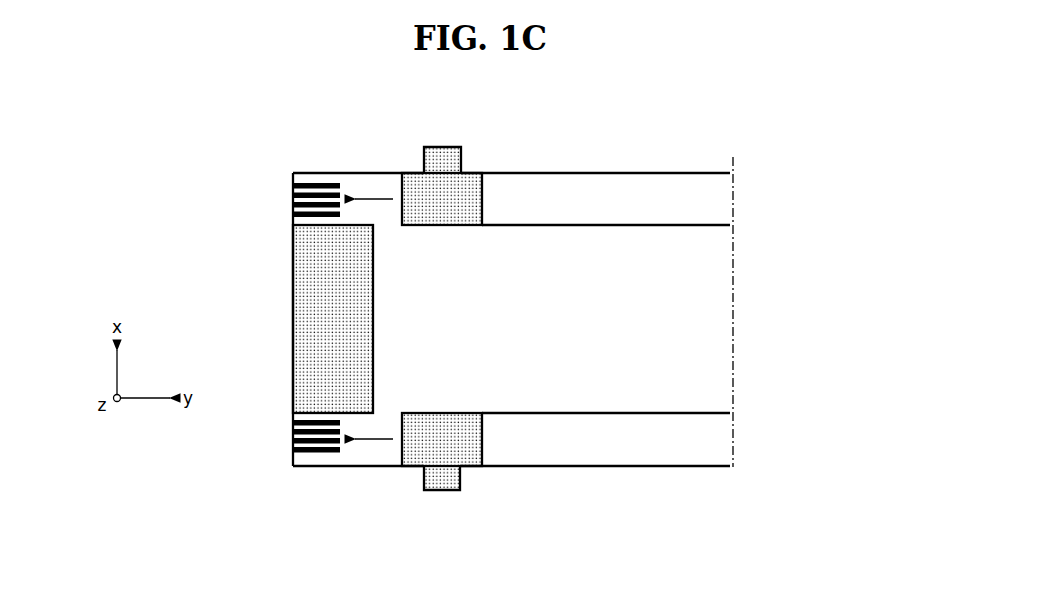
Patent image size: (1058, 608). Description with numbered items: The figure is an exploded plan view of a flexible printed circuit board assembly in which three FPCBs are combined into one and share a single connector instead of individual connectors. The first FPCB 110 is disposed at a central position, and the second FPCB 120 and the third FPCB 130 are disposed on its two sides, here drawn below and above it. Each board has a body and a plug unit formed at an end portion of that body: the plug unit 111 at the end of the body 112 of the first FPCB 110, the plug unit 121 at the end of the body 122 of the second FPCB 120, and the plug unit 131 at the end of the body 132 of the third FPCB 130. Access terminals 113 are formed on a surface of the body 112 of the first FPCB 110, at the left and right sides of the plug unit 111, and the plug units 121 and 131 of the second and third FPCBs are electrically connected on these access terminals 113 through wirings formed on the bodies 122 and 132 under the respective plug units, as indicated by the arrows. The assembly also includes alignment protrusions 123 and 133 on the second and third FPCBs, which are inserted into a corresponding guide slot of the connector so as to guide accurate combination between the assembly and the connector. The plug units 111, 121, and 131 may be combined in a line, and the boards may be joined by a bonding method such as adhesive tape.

The first FPCB 110 is at (738, 355).
The plug unit 111 is at (293, 314).
The body 112 is at (554, 352).
The access terminals 113 is at (293, 197).
The second FPCB 120 is at (567, 479).
The plug unit 121 is at (423, 443).
The body 122 is at (522, 457).
The alignment protrusion 123 is at (443, 491).
The third FPCB 130 is at (567, 153).
The plug unit 131 is at (418, 186).
The body 132 is at (555, 183).
The alignment protrusion 133 is at (437, 147).